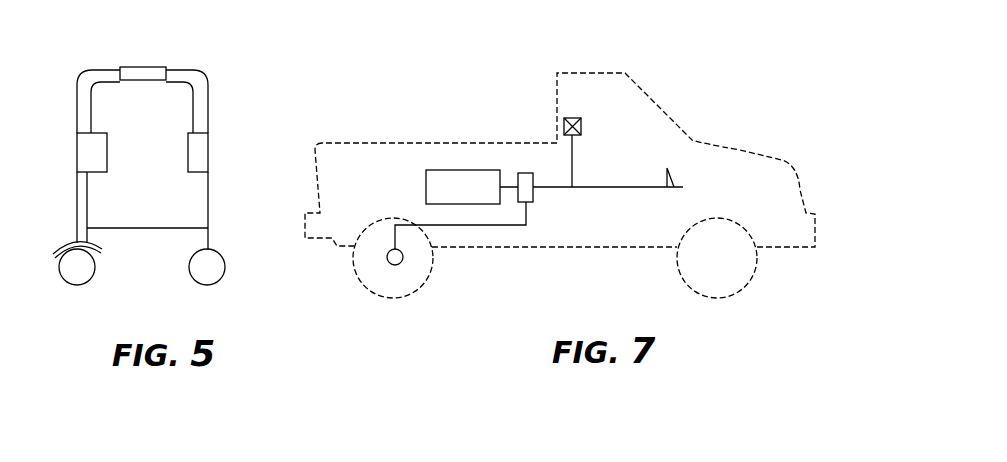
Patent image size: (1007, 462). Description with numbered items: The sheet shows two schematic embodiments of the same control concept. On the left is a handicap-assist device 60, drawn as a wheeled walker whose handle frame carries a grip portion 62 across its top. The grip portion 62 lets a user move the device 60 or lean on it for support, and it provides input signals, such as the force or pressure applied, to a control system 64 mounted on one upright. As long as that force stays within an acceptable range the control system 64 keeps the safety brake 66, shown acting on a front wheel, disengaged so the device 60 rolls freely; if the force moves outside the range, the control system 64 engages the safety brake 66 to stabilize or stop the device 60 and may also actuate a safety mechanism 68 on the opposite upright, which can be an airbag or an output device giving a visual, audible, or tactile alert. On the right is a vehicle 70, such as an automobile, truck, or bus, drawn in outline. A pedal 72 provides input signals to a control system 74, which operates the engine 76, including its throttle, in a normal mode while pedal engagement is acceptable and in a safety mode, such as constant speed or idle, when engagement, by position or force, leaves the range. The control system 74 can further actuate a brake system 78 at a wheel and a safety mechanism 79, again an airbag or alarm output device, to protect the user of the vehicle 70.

In FIG. 5, the handicap-assist device 60 is at (272, 58).
In FIG. 5, the grip portion 62 is at (155, 66).
In FIG. 5, the control system 64 is at (107, 157).
In FIG. 5, the safety brake 66 is at (101, 249).
In FIG. 5, the safety mechanism 68 is at (208, 157).
In FIG. 7, the vehicle 70 is at (668, 113).
In FIG. 7, the pedal 72 is at (668, 190).
In FIG. 7, the control system 74 is at (520, 193).
In FIG. 7, the engine 76 is at (438, 193).
In FIG. 7, the brake system 78 is at (403, 262).
In FIG. 7, the safety mechanism 79 is at (571, 117).